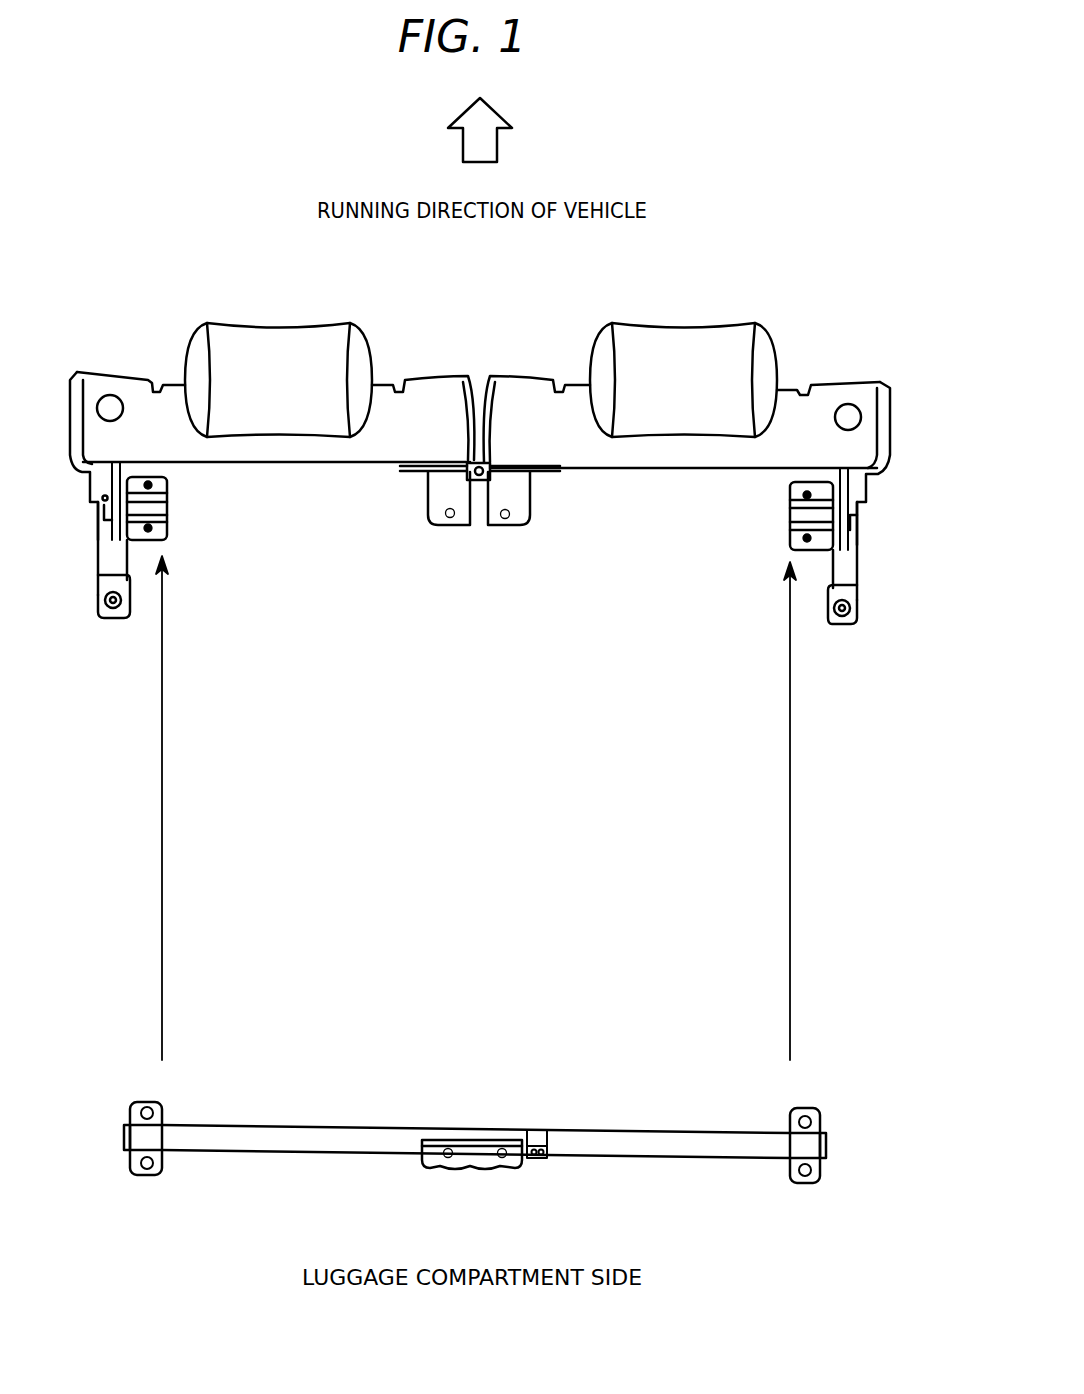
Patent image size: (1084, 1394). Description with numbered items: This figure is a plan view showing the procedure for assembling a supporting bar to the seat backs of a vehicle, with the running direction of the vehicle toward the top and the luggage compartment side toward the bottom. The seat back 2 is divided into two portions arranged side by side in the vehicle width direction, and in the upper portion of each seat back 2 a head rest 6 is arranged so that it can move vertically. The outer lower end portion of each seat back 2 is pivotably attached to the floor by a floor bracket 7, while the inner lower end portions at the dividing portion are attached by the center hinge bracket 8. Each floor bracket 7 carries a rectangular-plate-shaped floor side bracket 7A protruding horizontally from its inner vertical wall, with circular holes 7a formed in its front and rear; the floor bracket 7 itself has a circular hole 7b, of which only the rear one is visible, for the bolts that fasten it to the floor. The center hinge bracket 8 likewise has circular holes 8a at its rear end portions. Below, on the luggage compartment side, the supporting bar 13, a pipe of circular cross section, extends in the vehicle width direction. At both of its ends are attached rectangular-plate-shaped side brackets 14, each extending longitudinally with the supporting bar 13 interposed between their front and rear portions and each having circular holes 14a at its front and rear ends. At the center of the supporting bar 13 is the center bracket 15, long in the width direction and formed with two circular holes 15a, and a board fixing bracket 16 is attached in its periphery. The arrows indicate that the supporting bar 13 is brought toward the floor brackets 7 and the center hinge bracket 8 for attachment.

The seat back 2 is at (172, 382).
The head rest 6 is at (285, 345).
The floor bracket 7 is at (98, 572).
The circular hole 7a is at (150, 485).
The floor side bracket 7A is at (167, 528).
The circular hole 7b is at (108, 616).
The center hinge bracket 8 is at (428, 500).
The circular hole 8a is at (446, 516).
The supporting bar 13 is at (362, 1152).
The side bracket 14 is at (130, 1120).
The circular hole 14a is at (150, 1112).
The center bracket 15 is at (472, 1150).
The circular hole 15a is at (446, 1157).
The board fixing bracket 16 is at (540, 1160).